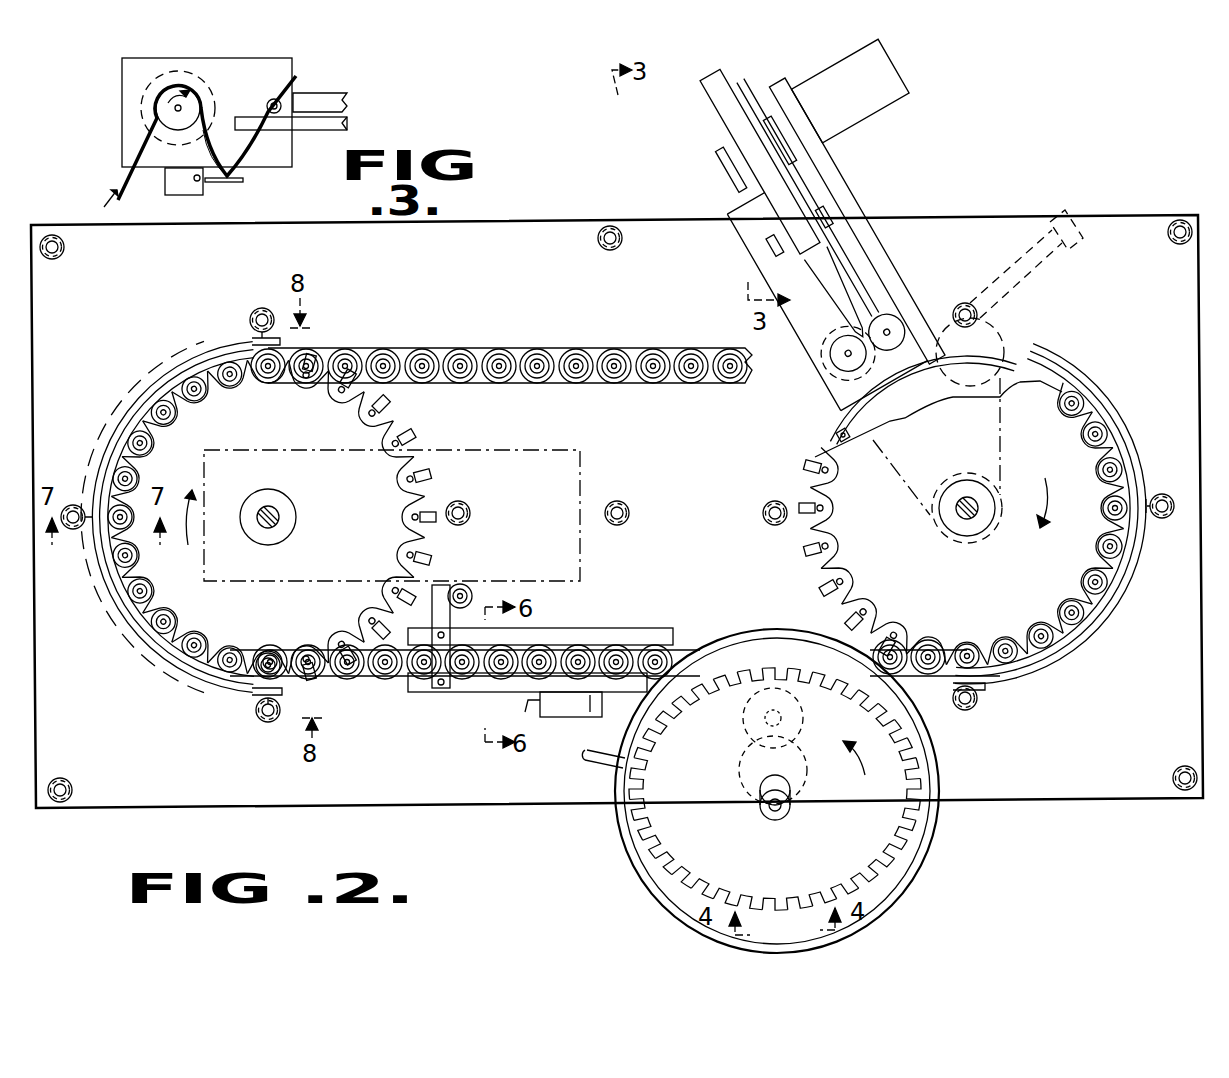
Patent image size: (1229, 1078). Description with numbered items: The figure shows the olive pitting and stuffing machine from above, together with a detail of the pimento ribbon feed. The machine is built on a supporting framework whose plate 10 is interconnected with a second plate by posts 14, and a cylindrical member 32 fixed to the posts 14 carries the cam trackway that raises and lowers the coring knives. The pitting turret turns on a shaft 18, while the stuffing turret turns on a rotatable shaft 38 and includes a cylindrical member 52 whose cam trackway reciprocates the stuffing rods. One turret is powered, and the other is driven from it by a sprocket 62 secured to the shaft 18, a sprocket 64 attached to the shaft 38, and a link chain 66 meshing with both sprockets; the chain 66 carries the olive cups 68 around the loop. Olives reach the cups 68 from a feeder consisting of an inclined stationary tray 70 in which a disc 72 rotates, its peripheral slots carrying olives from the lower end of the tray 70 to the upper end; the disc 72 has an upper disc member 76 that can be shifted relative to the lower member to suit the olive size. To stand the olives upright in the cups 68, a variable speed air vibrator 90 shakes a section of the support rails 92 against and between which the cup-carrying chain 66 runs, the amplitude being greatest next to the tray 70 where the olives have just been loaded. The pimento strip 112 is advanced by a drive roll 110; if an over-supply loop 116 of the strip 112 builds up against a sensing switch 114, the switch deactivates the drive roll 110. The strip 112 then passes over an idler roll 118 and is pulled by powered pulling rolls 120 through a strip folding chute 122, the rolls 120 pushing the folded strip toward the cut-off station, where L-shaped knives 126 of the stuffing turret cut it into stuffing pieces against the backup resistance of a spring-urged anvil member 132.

In FIG. 2, the plate 10 is at (1128, 726).
In FIG. 2, the posts 14 is at (600, 244).
In FIG. 2, the shaft 18 is at (283, 512).
In FIG. 2, the cylindrical member 32 is at (140, 644).
In FIG. 2, the rotatable shaft 38 is at (962, 522).
In FIG. 2, the cylindrical member 52 is at (1142, 590).
In FIG. 2, the sprocket 62 is at (312, 628).
In FIG. 2, the sprocket 64 is at (1026, 591).
In FIG. 2, the link chain 66 is at (498, 350).
In FIG. 2, the olive cups 68 is at (578, 354).
In FIG. 2, the inclined stationary tray 70 is at (940, 758).
In FIG. 2, the disc 72 is at (890, 842).
In FIG. 2, the upper disc member 76 is at (836, 854).
In FIG. 2, the variable speed air vibrator 90 is at (556, 720).
In FIG. 2, the support rails 92 is at (456, 694).
In FIG. 3, the drive roll 110 is at (198, 97).
In FIG. 2, the drive roll 110 is at (783, 152).
In FIG. 3, the strip 112 is at (130, 152).
In FIG. 3, the sensing switch 114 is at (218, 186).
In FIG. 3, the over-supply loop 116 is at (245, 163).
In FIG. 3, the idler roll 118 is at (288, 96).
In FIG. 2, the idler roll 118 is at (850, 238).
In FIG. 2, the powered pulling rolls 120 is at (893, 318).
In FIG. 2, the strip folding chute 122 is at (873, 300).
In FIG. 2, the L-shaped knives 126 is at (832, 434).
In FIG. 2, the anvil member 132 is at (905, 418).